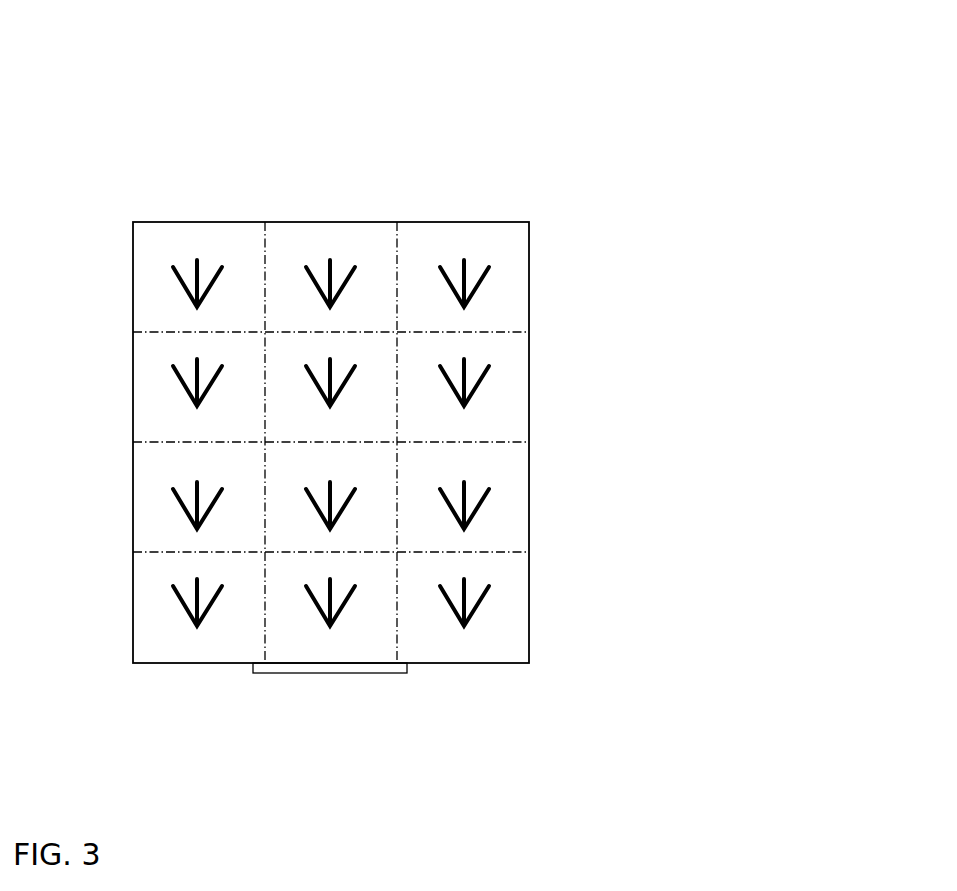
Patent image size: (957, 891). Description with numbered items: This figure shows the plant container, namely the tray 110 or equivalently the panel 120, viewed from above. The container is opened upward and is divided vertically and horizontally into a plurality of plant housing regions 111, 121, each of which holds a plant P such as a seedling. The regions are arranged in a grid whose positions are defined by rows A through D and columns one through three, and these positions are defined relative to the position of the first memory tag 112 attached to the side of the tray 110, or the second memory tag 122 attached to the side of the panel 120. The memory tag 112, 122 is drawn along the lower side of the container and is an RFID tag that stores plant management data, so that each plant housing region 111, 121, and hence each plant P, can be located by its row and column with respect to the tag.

The tray 110 is at (295, 339).
The panel 120 is at (311, 425).
The plant housing region 111 is at (645, 594).
The plant housing region 121 is at (507, 503).
The first memory tag 112 is at (370, 743).
The second memory tag 122 is at (330, 673).
The plant P is at (502, 277).